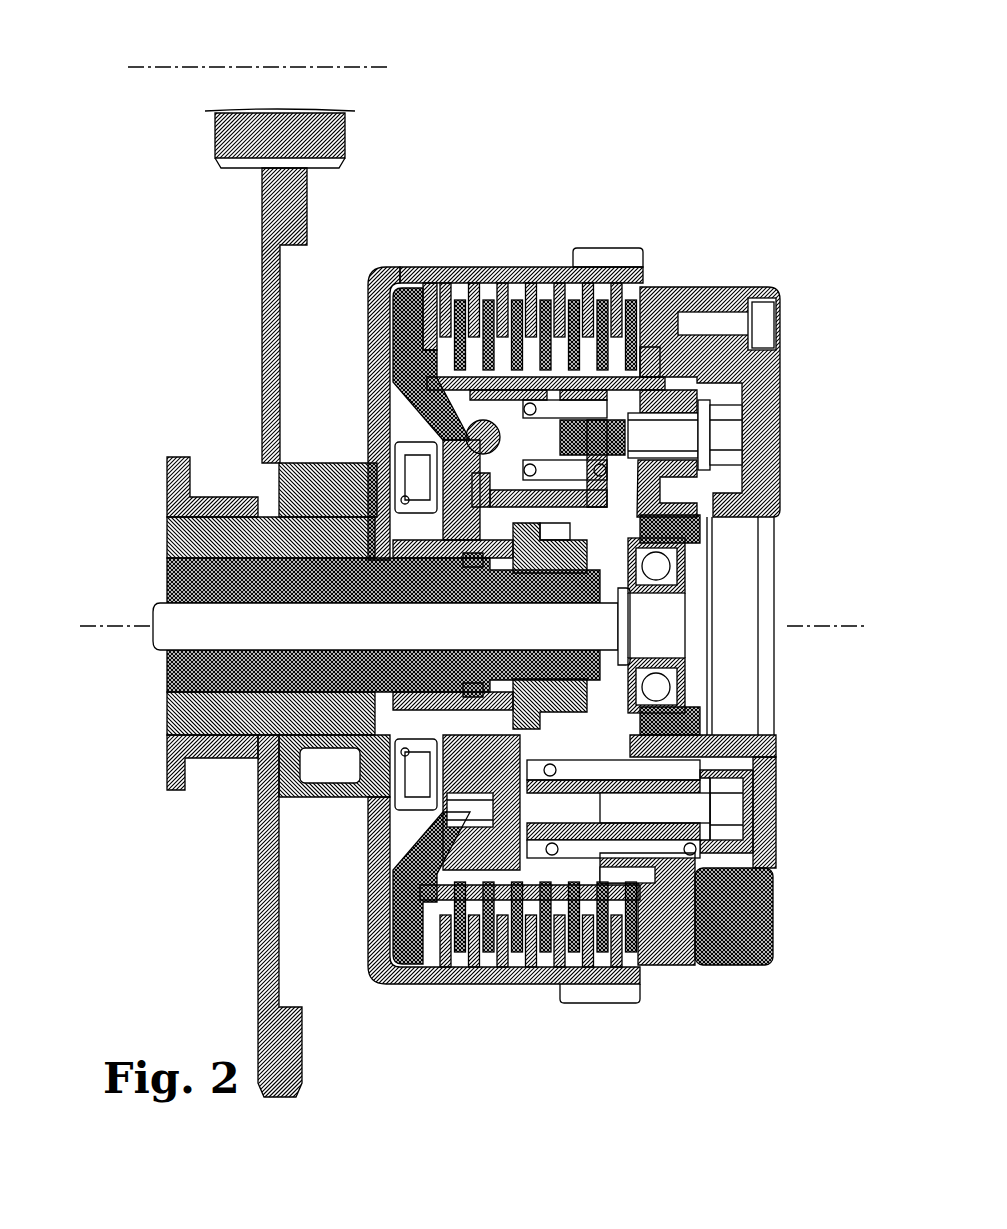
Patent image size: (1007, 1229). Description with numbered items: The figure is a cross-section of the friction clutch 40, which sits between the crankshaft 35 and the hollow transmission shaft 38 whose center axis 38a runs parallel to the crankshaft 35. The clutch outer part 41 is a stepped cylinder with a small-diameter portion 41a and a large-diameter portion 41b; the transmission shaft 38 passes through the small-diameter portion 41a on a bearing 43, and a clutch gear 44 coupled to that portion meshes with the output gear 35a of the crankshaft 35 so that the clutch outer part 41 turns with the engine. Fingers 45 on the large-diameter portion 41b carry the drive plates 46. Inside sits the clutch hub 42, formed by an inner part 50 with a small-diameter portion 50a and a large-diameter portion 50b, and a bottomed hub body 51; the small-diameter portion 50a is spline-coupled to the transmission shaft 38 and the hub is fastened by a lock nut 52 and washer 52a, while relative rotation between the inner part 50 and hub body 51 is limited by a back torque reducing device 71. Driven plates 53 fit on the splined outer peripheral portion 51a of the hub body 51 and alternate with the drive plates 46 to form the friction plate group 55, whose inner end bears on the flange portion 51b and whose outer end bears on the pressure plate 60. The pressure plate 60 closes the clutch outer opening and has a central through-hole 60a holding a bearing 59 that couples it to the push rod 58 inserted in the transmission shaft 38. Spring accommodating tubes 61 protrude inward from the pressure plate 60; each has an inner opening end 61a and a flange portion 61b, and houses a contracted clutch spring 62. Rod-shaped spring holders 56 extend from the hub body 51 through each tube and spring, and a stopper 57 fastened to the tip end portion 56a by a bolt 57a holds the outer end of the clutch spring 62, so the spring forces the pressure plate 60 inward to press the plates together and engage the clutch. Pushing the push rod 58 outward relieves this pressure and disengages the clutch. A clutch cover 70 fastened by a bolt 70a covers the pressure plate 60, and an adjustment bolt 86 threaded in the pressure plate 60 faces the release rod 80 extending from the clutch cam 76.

The crankshaft 35 is at (345, 67).
The output gear 35a is at (216, 150).
The transmission shaft 38 is at (178, 562).
The center axis 38a is at (100, 625).
The friction clutch 40 is at (750, 132).
The clutch outer part 41 is at (380, 282).
The small-diameter portion 41a is at (325, 475).
The large-diameter portion 41b is at (412, 268).
The clutch hub 42 is at (405, 374).
The bearing 43 is at (218, 527).
The clutch gear 44 is at (262, 300).
The fingers 45 is at (640, 265).
The drive plates 46 is at (578, 284).
The inner part 50 is at (355, 809).
The small-diameter portion 50a is at (410, 748).
The large-diameter portion 50b is at (428, 790).
The hub body 51 is at (440, 392).
The outer peripheral portion 51a is at (635, 362).
The flange portion 51b is at (424, 284).
The lock nut 52 is at (592, 562).
The washer 52a is at (545, 532).
The driven plates 53 is at (462, 284).
The friction plate group 55 is at (536, 606).
The spring holders 56 is at (702, 746).
The tip end portion 56a is at (712, 768).
The stopper 57 is at (746, 850).
The bolt 57a is at (728, 808).
The push rod 58 is at (163, 637).
The bearing 59 is at (675, 606).
The pressure plate 60 is at (720, 335).
The through-hole 60a is at (708, 540).
The spring accommodating tubes 61 is at (640, 978).
The inner opening end 61a is at (568, 990).
The flange portion 61b is at (470, 948).
The clutch spring 62 is at (706, 966).
The clutch cover 70 is at (776, 660).
The bolt 70a is at (768, 318).
The back torque reducing device 71 is at (640, 400).
The clutch cam 76 is at (632, 432).
The release rod 80 is at (608, 442).
The adjustment bolt 86 is at (690, 448).